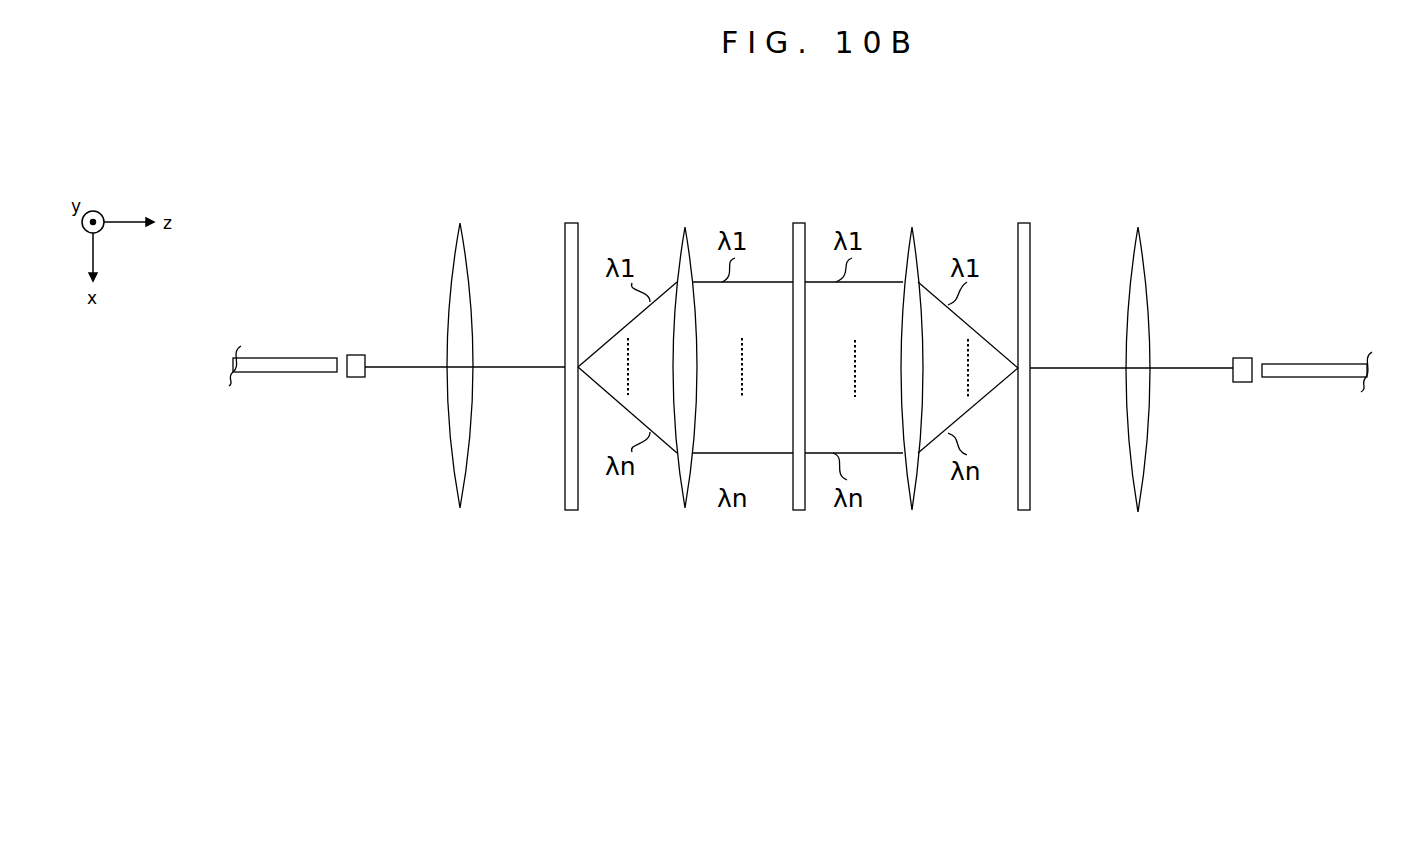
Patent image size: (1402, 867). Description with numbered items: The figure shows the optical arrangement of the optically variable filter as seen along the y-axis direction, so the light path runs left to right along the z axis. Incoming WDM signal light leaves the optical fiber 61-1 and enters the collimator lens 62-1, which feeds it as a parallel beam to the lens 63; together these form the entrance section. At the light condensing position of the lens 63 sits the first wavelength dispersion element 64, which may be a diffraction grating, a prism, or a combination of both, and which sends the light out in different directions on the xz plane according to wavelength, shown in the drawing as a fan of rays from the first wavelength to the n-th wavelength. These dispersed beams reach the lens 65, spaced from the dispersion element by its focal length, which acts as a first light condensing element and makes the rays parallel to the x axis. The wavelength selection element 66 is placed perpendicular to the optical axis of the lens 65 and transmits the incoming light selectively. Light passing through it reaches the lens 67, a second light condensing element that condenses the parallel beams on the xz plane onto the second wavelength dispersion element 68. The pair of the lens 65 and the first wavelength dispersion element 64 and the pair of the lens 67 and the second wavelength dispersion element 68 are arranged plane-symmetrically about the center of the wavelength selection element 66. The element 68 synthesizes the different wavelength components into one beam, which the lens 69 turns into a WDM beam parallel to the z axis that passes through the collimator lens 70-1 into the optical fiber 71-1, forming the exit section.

The optical fiber 61-1 is at (283, 358).
The collimator lens 62-1 is at (380, 338).
The lens 63 is at (466, 238).
The first wavelength dispersion element 64 is at (580, 238).
The lens 65 is at (694, 238).
The wavelength selection element 66 is at (808, 238).
The lens 67 is at (918, 238).
The second wavelength dispersion element 68 is at (1032, 238).
The lens 69 is at (1143, 238).
The collimator lens 70-1 is at (1233, 358).
The optical fiber 71-1 is at (1316, 364).